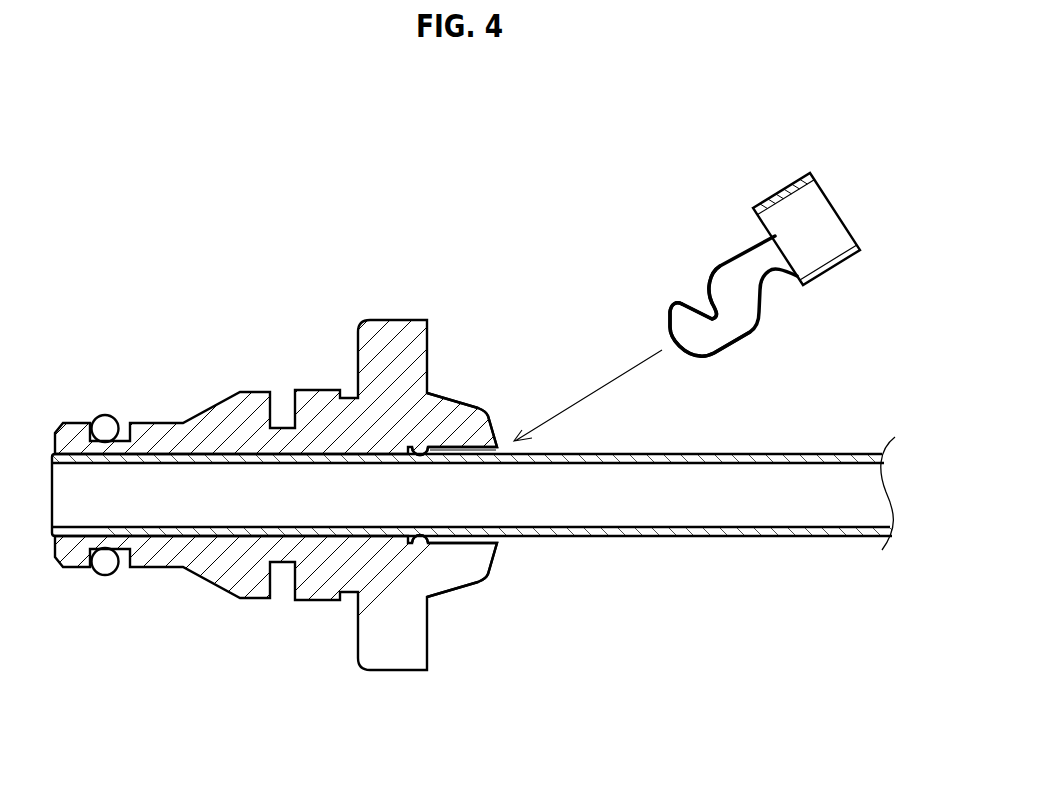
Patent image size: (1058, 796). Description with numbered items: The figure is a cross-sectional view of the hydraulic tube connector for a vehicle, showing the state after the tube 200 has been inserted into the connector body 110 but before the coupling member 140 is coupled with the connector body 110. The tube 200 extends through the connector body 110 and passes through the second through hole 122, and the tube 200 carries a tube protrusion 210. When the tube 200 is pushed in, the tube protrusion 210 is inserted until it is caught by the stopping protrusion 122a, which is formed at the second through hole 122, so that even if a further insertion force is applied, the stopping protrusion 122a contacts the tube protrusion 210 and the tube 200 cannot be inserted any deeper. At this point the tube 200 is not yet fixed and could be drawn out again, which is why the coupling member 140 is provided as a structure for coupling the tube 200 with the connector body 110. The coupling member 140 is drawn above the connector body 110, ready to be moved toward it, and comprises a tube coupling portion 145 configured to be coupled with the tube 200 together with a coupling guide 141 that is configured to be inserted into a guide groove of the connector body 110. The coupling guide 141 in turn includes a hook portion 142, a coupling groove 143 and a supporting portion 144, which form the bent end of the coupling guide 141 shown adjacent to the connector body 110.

The connector body 110 is at (172, 381).
The second through hole 122 is at (461, 452).
The stopping protrusion 122a is at (420, 452).
The coupling member 140 is at (705, 217).
The coupling guide 141 is at (674, 248).
The hook portion 142 is at (675, 325).
The coupling groove 143 is at (704, 303).
The supporting portion 144 is at (722, 282).
The tube coupling portion 145 is at (786, 181).
The tube 200 is at (771, 557).
The tube protrusion 210 is at (426, 541).